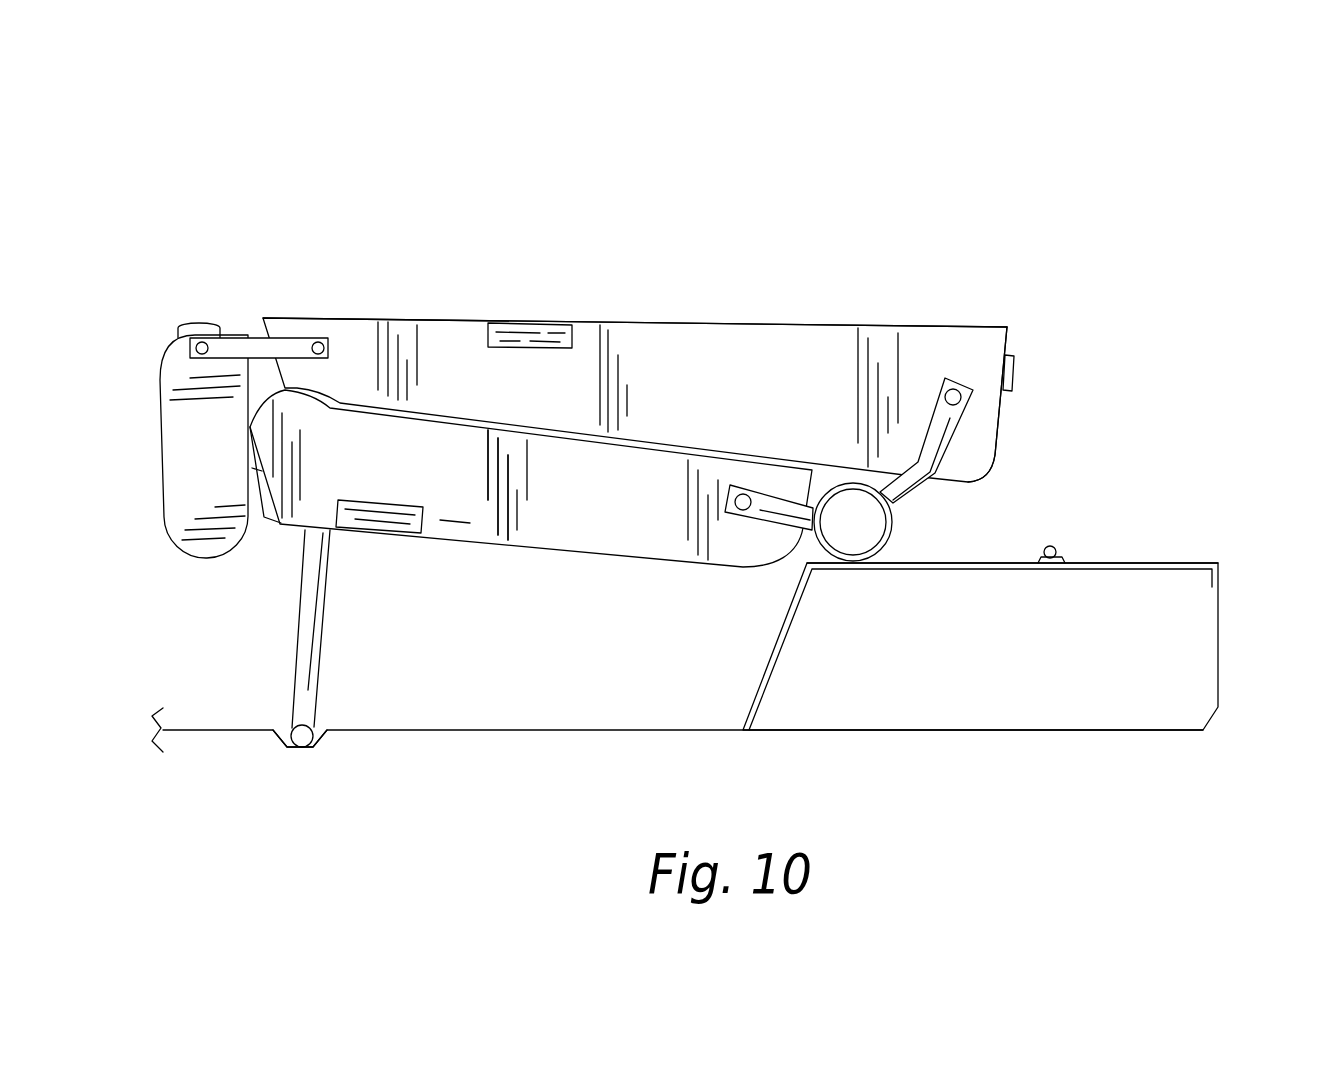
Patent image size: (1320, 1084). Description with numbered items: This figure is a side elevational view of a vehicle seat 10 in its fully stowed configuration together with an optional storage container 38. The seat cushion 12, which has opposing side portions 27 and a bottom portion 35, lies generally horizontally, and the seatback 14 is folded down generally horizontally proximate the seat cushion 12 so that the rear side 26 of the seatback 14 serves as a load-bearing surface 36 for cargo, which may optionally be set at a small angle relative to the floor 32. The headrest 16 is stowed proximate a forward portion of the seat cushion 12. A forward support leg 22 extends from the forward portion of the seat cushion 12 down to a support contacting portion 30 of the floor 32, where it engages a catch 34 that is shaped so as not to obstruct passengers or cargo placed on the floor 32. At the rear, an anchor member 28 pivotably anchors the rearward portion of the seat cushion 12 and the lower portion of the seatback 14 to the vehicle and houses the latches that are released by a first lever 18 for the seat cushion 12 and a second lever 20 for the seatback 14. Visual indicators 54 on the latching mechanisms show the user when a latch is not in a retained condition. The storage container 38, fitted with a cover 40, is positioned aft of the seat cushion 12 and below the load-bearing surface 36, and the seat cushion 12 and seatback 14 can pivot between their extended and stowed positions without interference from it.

The vehicle seat 10 is at (695, 454).
The seat cushion 12 is at (647, 557).
The seatback 14 is at (915, 325).
The headrest 16 is at (158, 402).
The first lever 18 is at (390, 531).
The second lever 20 is at (531, 338).
The forward support leg 22 is at (303, 605).
The rear side of the seatback 26 is at (730, 322).
The side portion 27 is at (467, 541).
The anchor member 28 is at (890, 531).
The support contacting portion 30 is at (323, 723).
The floor 32 is at (563, 728).
The catch 34 is at (303, 748).
The bottom portion 35 is at (507, 533).
The load-bearing surface 36 is at (665, 282).
The storage container 38 is at (1218, 645).
The cover 40 is at (1130, 562).
The visual indicator 54 is at (199, 320).